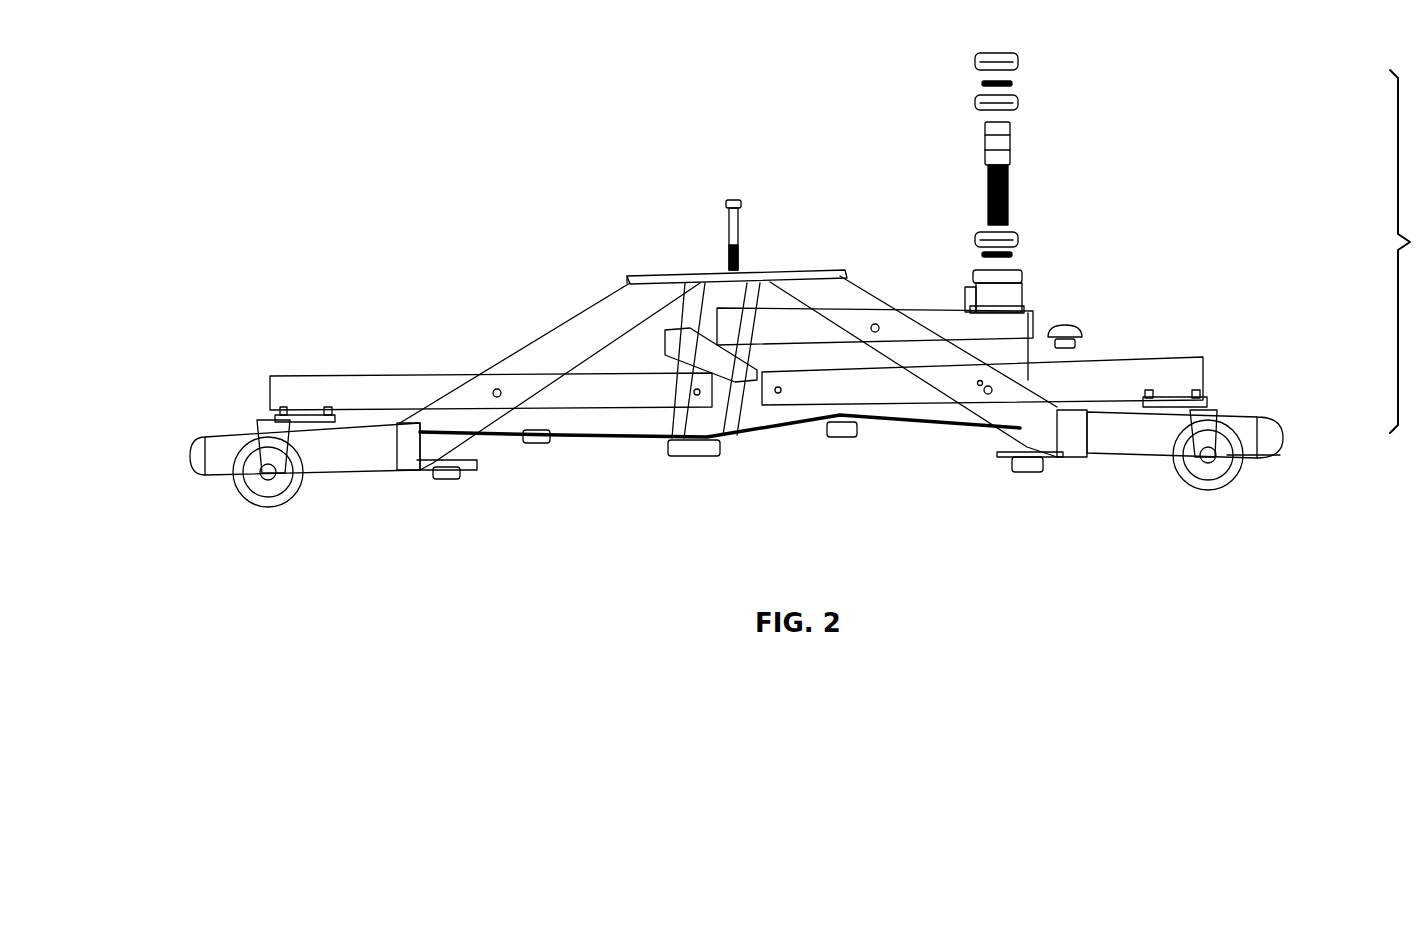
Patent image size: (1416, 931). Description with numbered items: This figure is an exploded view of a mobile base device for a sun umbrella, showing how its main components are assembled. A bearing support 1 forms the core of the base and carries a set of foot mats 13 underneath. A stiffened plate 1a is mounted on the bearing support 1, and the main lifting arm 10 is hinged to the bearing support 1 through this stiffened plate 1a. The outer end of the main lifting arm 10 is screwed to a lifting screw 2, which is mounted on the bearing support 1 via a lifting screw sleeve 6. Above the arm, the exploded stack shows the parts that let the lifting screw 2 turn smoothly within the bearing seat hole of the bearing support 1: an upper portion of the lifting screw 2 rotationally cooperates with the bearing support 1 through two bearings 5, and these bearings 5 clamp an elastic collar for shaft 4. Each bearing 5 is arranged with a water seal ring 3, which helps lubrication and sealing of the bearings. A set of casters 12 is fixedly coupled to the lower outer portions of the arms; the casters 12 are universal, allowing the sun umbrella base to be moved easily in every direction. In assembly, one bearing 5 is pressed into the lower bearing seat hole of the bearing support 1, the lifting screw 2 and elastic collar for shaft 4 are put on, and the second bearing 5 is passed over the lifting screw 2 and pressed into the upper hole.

The bearing support 1 is at (190, 450).
The stiffened plate 1a is at (628, 315).
The lifting screw 2 is at (985, 143).
The water seal ring 3 is at (975, 63).
The elastic collar for shaft 4 is at (982, 83).
The bearing 5 is at (975, 103).
The lifting screw sleeve 6 is at (1083, 338).
The main lifting arm 10 is at (1017, 327).
The caster 12 is at (1223, 484).
The foot mat 13 is at (1030, 470).